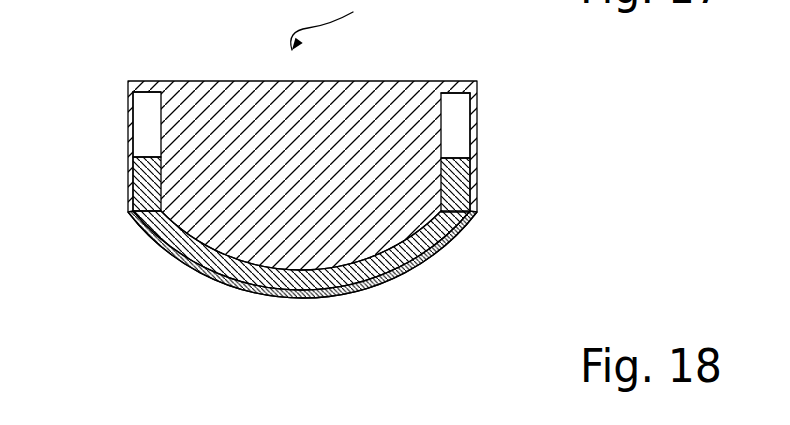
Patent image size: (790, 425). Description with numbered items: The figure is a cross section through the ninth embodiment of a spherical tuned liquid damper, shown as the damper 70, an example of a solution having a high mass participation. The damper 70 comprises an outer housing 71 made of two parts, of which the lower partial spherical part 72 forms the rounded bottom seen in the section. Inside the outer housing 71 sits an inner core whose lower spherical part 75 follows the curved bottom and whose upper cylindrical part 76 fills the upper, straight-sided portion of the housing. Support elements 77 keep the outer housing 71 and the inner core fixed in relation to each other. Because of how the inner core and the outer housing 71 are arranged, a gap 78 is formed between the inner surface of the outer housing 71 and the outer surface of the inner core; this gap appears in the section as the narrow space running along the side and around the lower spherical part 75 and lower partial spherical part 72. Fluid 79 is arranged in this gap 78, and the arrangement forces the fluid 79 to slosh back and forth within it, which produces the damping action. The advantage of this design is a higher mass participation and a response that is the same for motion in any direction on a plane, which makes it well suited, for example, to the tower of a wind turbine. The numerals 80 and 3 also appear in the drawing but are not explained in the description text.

The damper 70 is at (325, 205).
The outer housing 71 is at (487, 101).
The lower partial spherical part 72 is at (145, 230).
The lower spherical part 75 is at (358, 248).
The upper cylindrical part 76 is at (217, 88).
The support elements 77 is at (148, 81).
The gap 78 is at (460, 122).
The fluid 79 is at (455, 182).
The intermediate layer 80 is at (447, 212).
The side wall 3 is at (130, 127).